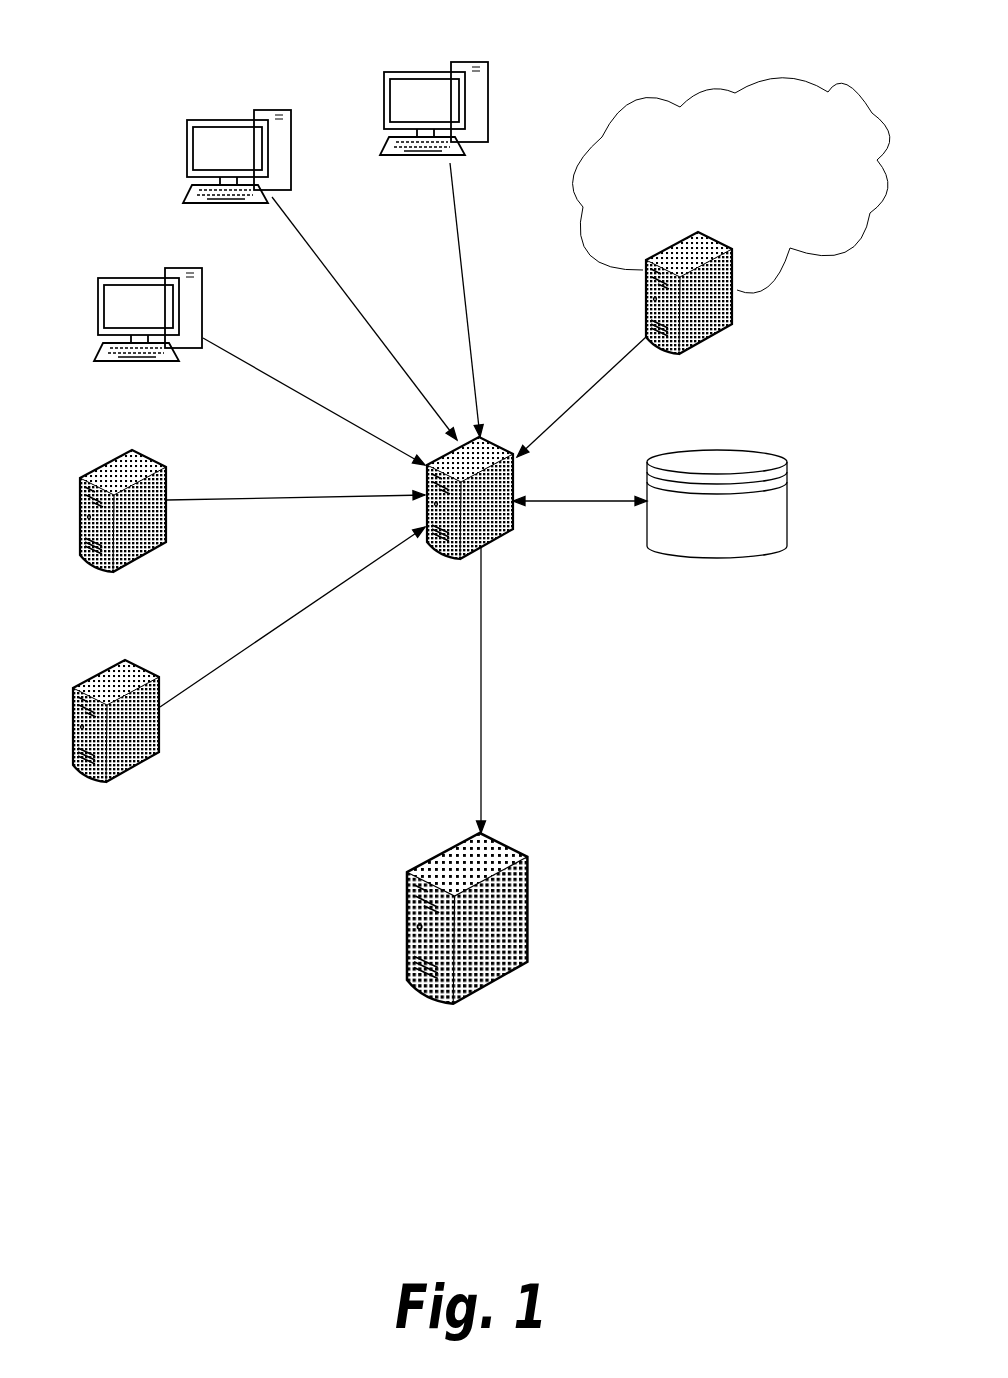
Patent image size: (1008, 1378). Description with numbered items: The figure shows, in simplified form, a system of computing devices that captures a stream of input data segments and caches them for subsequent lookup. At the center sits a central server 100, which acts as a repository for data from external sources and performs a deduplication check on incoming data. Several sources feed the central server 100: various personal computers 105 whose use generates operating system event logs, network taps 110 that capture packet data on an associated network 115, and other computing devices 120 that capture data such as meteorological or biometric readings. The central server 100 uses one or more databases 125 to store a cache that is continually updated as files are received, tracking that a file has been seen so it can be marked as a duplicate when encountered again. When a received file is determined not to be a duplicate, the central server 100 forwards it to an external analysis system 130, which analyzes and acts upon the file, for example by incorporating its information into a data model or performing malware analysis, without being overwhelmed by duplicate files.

The central server 100 is at (497, 540).
The personal computers 105 is at (223, 122).
The network taps 110 is at (732, 324).
The network 115 is at (678, 156).
The computing devices 120 is at (117, 458).
The databases 125 is at (701, 552).
The external analysis system 130 is at (533, 918).